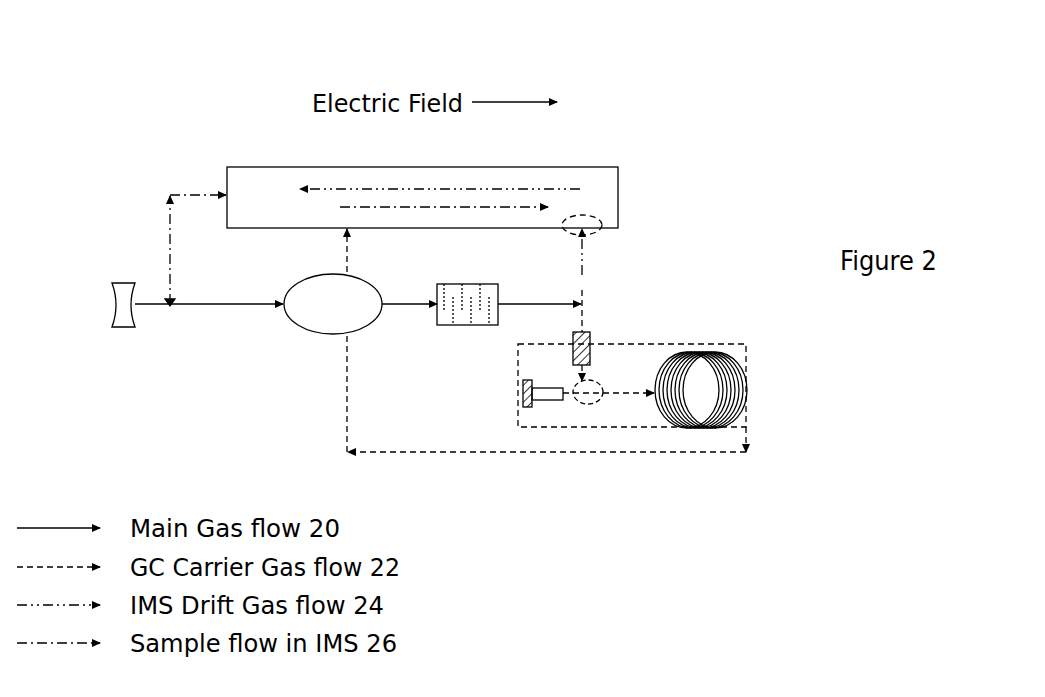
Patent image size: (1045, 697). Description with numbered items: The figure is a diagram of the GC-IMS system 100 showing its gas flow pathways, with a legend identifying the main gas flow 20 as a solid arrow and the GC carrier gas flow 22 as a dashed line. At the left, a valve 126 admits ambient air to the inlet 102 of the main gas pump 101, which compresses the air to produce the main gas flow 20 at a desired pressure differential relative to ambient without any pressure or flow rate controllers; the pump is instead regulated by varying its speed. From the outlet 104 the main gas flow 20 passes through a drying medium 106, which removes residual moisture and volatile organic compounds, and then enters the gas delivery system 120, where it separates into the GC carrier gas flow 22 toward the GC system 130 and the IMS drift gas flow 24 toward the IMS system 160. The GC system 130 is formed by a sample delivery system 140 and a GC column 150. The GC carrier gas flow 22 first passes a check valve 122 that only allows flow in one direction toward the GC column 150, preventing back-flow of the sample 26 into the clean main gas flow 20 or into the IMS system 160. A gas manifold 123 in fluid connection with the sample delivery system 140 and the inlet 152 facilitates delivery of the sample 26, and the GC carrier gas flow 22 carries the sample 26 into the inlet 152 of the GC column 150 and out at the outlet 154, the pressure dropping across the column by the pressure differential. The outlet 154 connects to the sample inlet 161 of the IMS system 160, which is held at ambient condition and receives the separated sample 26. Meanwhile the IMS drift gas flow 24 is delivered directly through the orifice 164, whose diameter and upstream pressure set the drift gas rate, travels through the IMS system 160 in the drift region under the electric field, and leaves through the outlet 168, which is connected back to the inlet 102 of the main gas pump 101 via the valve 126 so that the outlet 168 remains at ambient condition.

The GC-IMS system 100 is at (695, 50).
The IMS system 160 is at (422, 197).
The outlet 168 is at (225, 188).
The IMS drift gas flow 24 is at (364, 186).
The sample 26 is at (452, 205).
The orifice 164 is at (603, 222).
The valve 126 is at (105, 283).
The main gas flow 20 is at (410, 310).
The inlet 102 is at (282, 300).
The main gas pump 101 is at (333, 304).
The sample inlet 161 is at (343, 232).
The outlet 104 is at (385, 300).
The drying medium 106 is at (462, 283).
The gas delivery system 120 is at (560, 290).
The GC carrier gas flow 22 is at (588, 322).
The check valve 122 is at (572, 343).
The GC system 130 is at (748, 346).
The sample delivery system 140 is at (518, 388).
The gas manifold 123 is at (578, 405).
The GC column 150 is at (672, 345).
The inlet 152 is at (652, 400).
The outlet 154 is at (748, 393).